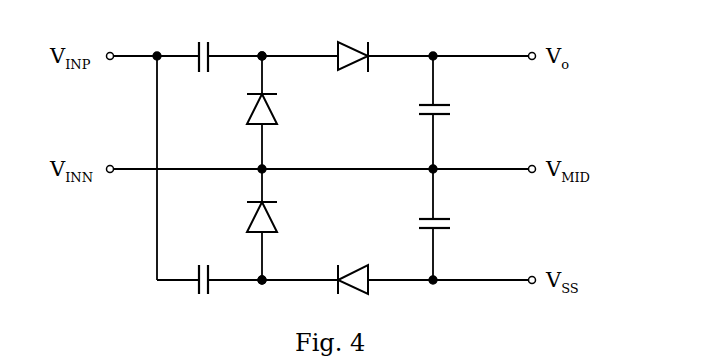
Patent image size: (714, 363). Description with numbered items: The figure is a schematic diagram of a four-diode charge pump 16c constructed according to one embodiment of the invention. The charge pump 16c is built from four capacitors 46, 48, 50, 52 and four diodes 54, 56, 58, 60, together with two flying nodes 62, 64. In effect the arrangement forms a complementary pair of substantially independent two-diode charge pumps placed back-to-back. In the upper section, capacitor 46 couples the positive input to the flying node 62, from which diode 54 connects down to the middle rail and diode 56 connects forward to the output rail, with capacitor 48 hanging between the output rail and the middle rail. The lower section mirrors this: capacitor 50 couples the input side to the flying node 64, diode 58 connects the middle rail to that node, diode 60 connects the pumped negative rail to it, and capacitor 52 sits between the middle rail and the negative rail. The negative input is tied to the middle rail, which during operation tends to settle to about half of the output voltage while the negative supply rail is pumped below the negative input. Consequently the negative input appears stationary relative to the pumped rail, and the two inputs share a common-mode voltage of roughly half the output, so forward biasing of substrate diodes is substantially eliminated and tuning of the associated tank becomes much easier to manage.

The 4-diode charge pump 16c is at (257, 312).
The capacitor 46 is at (205, 73).
The capacitor 48 is at (418, 107).
The capacitor 50 is at (203, 266).
The capacitor 52 is at (418, 219).
The diode 54 is at (271, 109).
The diode 56 is at (353, 68).
The diode 58 is at (271, 218).
The diode 60 is at (353, 267).
The flying node 62 is at (264, 58).
The flying node 64 is at (261, 278).